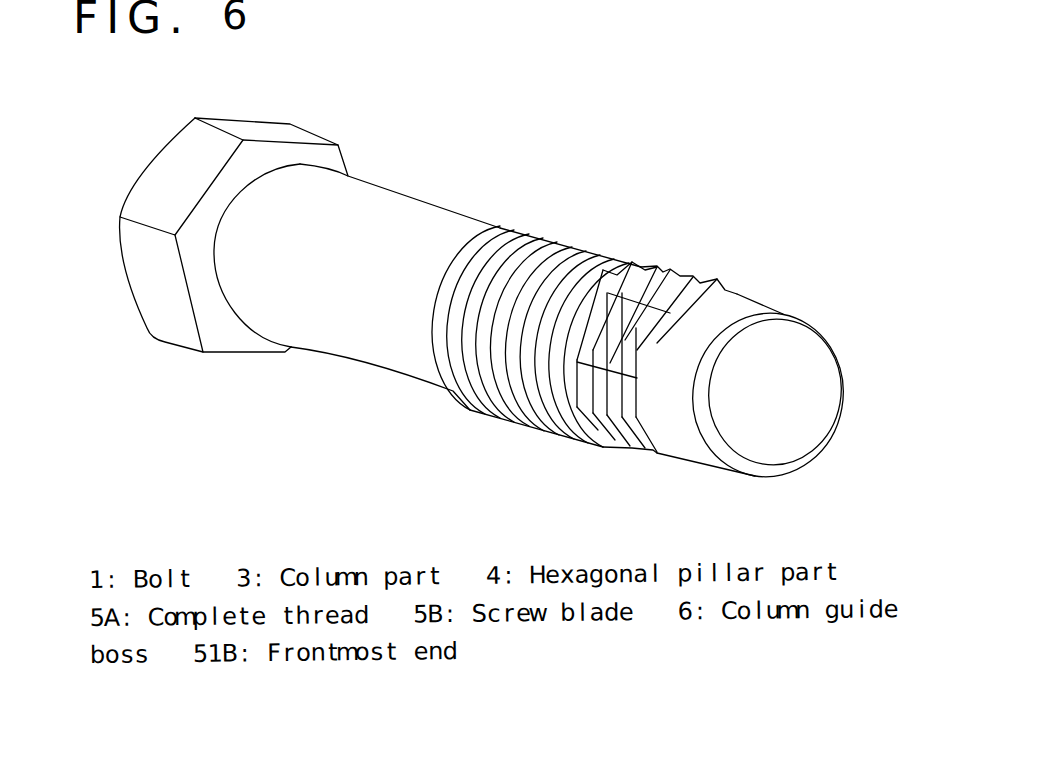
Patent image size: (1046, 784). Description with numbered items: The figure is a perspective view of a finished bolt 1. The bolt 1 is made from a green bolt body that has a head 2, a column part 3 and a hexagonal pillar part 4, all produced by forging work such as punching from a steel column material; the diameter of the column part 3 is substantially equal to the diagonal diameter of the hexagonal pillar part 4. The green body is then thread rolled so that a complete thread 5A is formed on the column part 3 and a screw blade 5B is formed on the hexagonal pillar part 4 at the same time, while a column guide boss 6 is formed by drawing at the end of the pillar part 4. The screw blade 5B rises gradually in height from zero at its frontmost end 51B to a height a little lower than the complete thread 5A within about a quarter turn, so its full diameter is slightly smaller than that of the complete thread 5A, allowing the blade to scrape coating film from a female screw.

The bolt 1 is at (447, 173).
The head 2 is at (300, 132).
The column part 3 is at (393, 363).
The hexagonal pillar part 4 is at (613, 443).
The complete thread 5A is at (555, 233).
The screw blade 5B is at (662, 337).
The column guide boss 6 is at (795, 344).
The frontmost end 51B is at (648, 300).